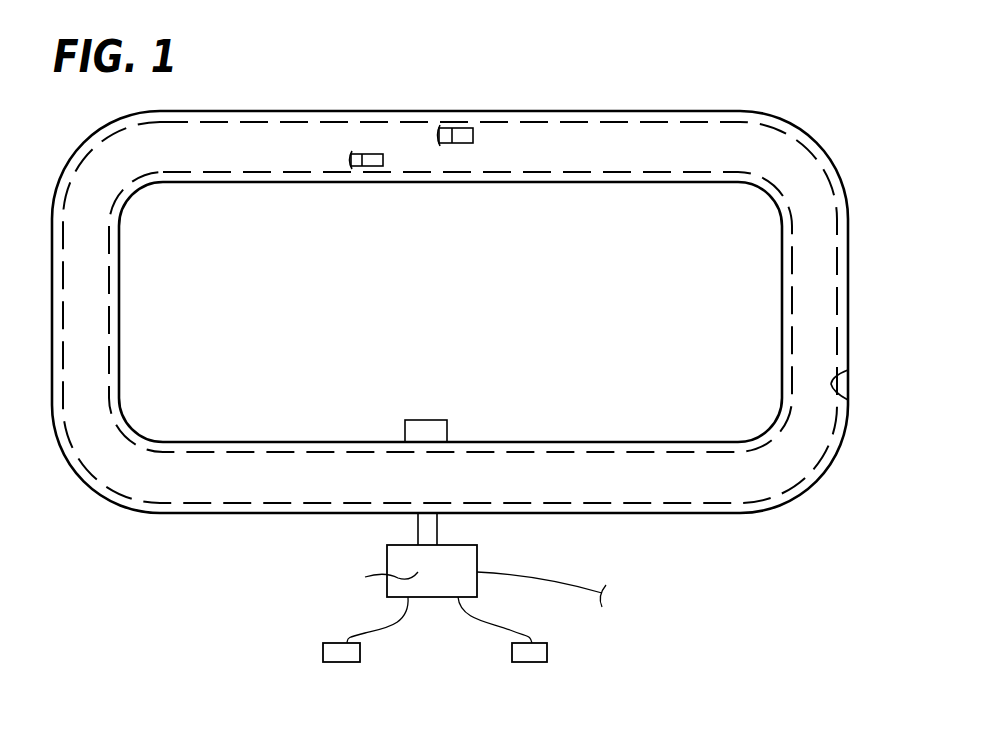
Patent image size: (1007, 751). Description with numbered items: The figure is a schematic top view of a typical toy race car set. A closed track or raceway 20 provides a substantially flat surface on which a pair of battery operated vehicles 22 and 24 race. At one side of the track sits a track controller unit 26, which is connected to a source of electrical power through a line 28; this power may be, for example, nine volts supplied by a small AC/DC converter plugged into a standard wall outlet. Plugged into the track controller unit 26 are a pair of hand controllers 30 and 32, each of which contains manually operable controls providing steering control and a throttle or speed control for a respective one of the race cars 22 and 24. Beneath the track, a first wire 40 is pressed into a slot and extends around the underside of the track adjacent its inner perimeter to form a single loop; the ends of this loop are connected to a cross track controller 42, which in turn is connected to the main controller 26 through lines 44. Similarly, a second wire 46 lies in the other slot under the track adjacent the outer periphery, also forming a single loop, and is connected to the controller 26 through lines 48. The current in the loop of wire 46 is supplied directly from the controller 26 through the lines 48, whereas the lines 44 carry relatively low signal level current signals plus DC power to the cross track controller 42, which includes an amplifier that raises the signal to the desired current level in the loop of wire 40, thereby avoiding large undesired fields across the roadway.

The closed track 20 is at (815, 282).
The battery operated vehicle 22 is at (352, 152).
The battery operated vehicle 24 is at (463, 128).
The track controller unit 26 is at (477, 556).
The line 28 is at (580, 589).
The hand controller 30 is at (323, 647).
The hand controller 32 is at (547, 650).
The first wire 40 is at (792, 312).
The cross track controller 42 is at (420, 420).
The lines 44 is at (437, 527).
The second wire 46 is at (846, 397).
The lines 48 is at (417, 528).